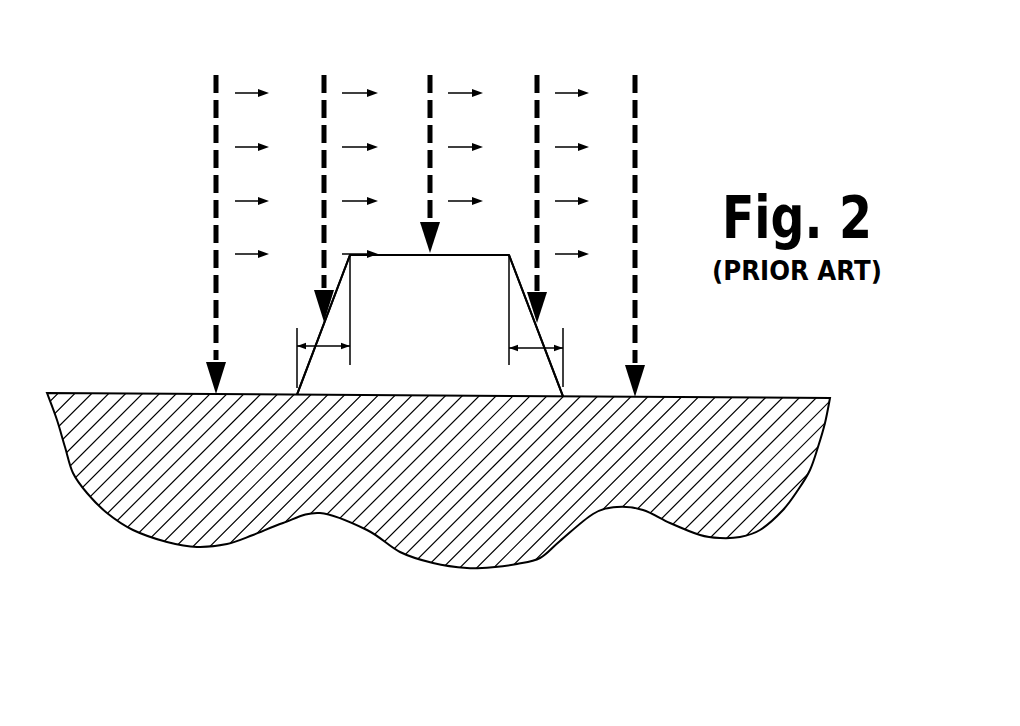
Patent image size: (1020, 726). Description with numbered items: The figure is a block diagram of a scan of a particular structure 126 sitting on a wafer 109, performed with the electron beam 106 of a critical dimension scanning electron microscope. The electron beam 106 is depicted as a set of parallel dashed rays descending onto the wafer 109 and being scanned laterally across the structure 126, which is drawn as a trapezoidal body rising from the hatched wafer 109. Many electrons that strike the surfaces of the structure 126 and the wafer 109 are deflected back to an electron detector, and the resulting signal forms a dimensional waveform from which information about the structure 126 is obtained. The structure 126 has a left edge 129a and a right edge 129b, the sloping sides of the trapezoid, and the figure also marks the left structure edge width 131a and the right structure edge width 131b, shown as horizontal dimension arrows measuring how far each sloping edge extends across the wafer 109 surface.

The electron beam 106 is at (213, 134).
The wafer 109 is at (740, 397).
The structure 126 is at (392, 335).
The left edge 129a is at (354, 259).
The right edge 129b is at (505, 263).
The left structure edge width 131a is at (326, 352).
The right structure edge width 131b is at (535, 352).